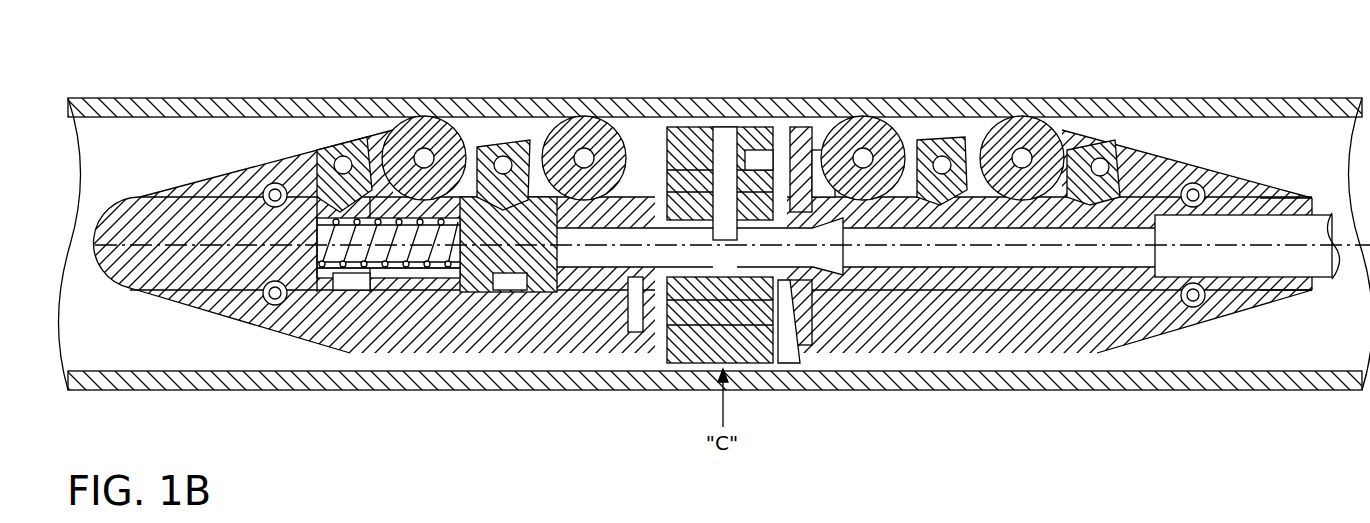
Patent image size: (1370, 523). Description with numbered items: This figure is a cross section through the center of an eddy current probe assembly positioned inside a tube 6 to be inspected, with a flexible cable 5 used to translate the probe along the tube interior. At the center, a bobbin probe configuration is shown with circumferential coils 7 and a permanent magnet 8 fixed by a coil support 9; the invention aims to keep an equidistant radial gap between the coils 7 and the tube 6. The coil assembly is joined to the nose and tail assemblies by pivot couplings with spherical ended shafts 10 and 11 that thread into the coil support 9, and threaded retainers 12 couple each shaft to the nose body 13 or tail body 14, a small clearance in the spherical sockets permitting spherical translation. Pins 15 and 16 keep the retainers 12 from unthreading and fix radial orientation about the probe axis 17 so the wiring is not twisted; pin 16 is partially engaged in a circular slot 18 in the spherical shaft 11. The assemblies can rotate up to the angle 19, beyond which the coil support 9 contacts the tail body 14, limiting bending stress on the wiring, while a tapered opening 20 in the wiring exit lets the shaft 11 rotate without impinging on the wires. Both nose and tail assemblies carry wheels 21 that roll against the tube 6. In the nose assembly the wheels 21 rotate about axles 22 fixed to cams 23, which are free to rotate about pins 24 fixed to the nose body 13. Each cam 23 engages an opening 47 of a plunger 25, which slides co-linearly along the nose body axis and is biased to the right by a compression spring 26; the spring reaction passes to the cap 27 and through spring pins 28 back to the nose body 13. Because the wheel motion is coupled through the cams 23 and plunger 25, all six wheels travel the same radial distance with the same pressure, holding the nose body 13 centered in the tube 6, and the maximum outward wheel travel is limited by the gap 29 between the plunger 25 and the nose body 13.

The flexible cable 5 is at (1255, 215).
The tube 6 is at (1135, 98).
The circumferential coils 7 is at (718, 128).
The permanent magnet 8 is at (800, 152).
The coil support 9 is at (768, 137).
The spherical ended shaft 10 is at (583, 292).
The spherical ended shaft 11 is at (835, 155).
The threaded retainer 12 is at (700, 137).
The nose body 13 is at (190, 192).
The tail body 14 is at (1192, 340).
The pin 15 is at (635, 345).
The pin 16 is at (813, 340).
The probe axis 17 is at (1330, 170).
The circular slot 18 is at (827, 280).
The angle 19 is at (802, 360).
The tapered opening 20 is at (843, 267).
The wheels 21 is at (400, 120).
The axles 22 is at (428, 148).
The cams 23 is at (350, 175).
The pins 24 is at (313, 150).
The plunger 25 is at (420, 285).
The compression spring 26 is at (353, 287).
The cap 27 is at (115, 282).
The spring pins 28 is at (263, 183).
The gap 29 is at (563, 283).
The opening 47 is at (337, 283).